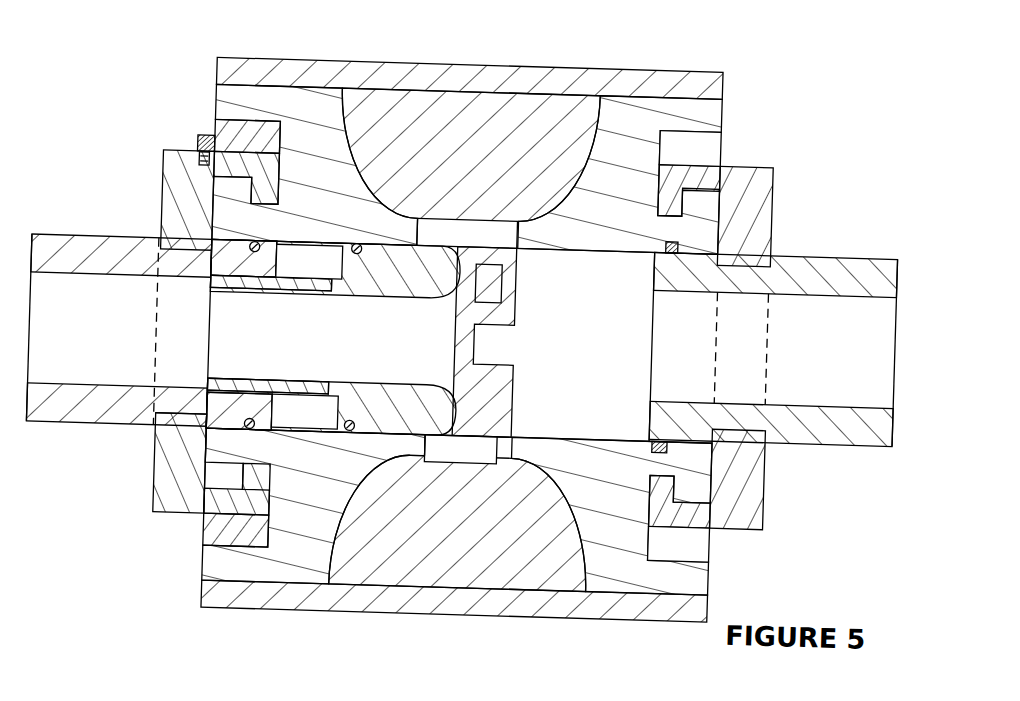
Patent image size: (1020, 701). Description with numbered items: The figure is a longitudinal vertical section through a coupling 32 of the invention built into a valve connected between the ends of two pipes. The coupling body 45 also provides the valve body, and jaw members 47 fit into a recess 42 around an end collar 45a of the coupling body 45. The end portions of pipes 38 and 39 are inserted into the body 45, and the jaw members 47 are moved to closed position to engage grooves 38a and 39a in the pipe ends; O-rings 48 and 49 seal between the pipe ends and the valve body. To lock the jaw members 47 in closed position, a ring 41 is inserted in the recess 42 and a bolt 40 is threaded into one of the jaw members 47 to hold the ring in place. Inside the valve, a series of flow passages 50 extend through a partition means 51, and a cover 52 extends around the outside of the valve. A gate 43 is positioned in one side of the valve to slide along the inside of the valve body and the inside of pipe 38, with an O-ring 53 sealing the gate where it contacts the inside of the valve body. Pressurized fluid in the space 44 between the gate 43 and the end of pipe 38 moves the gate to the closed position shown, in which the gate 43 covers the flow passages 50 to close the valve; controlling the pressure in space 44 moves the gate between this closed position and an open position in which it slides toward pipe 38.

The valve coupling assembly 32 is at (161, 446).
The pipe 38 is at (96, 273).
The groove 38a is at (185, 266).
The pipe 39 is at (823, 261).
The groove 39a is at (706, 298).
The bolt 40 is at (193, 151).
The ring 41 is at (211, 140).
The recess 42 is at (697, 145).
The gate 43 is at (386, 286).
The space 44 is at (310, 270).
The coupling body 45 is at (299, 557).
The end collar 45a is at (234, 479).
The jaw members 47 is at (164, 204).
The O-ring 48 is at (252, 431).
The O-ring 49 is at (658, 437).
The flow passages 50 is at (488, 284).
The partition means 51 is at (427, 576).
The cover 52 is at (565, 606).
The O-ring 53 is at (360, 428).